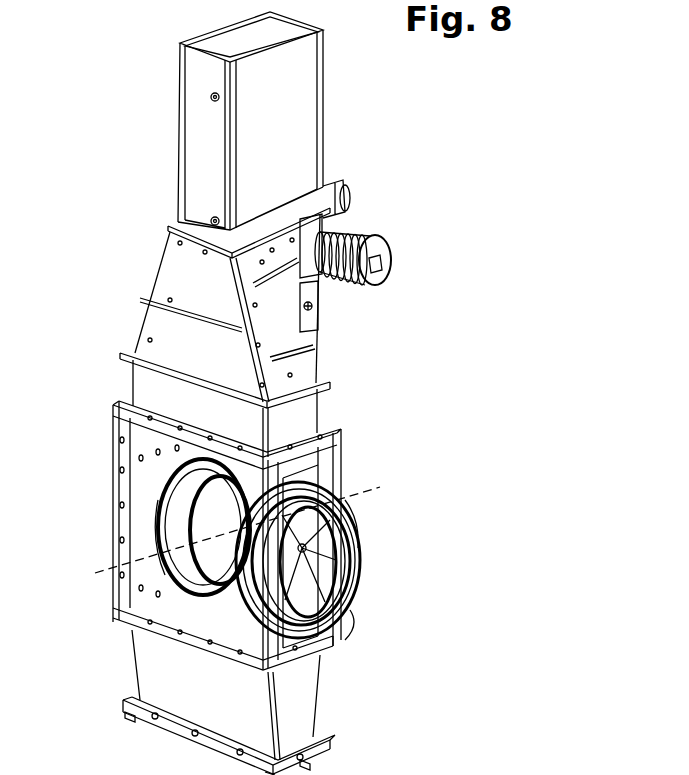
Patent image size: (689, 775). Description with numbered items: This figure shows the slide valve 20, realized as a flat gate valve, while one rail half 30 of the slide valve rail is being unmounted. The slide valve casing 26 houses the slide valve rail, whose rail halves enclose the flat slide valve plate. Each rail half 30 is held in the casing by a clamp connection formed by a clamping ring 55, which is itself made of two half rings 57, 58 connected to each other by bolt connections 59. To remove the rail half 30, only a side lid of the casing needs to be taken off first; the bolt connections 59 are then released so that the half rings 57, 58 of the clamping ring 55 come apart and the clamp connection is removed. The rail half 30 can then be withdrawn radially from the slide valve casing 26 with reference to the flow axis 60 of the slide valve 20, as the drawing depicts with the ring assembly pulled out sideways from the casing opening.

The slide valve 20 is at (367, 382).
The slide valve casing 26 is at (123, 448).
The rail half 30 is at (362, 573).
The clamping ring 55 is at (348, 602).
The half ring 57 is at (337, 512).
The half ring 58 is at (340, 640).
The bolt connection 59 is at (353, 540).
The flow axis 60 is at (376, 471).